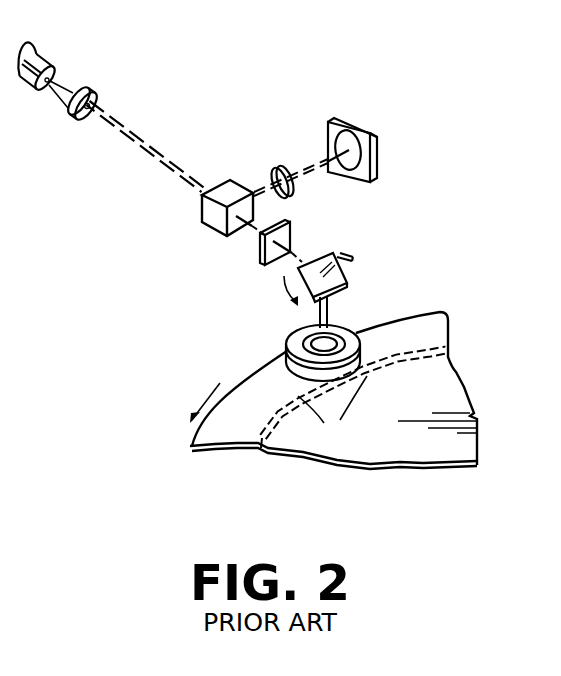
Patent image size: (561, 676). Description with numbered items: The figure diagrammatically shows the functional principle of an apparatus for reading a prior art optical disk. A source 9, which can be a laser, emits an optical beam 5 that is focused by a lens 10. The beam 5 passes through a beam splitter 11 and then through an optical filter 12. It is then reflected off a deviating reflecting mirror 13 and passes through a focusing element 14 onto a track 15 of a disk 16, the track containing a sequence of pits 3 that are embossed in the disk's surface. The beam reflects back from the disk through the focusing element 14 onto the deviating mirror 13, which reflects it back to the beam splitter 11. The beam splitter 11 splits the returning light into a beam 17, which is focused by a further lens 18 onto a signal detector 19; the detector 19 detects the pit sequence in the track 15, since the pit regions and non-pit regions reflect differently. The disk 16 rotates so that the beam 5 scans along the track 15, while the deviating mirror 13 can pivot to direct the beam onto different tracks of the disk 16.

The pits 3 is at (282, 432).
The optical beam 5 is at (55, 102).
The source 9 is at (43, 56).
The lens 10 is at (93, 92).
The beam splitter 11 is at (212, 222).
The optical filter 12 is at (262, 265).
The deviating reflecting mirror 13 is at (320, 258).
The focusing element 14 is at (287, 349).
The track 15 is at (418, 327).
The disk 16 is at (470, 414).
The beam 17 is at (258, 191).
The lens 18 is at (282, 167).
The signal detector 19 is at (352, 126).